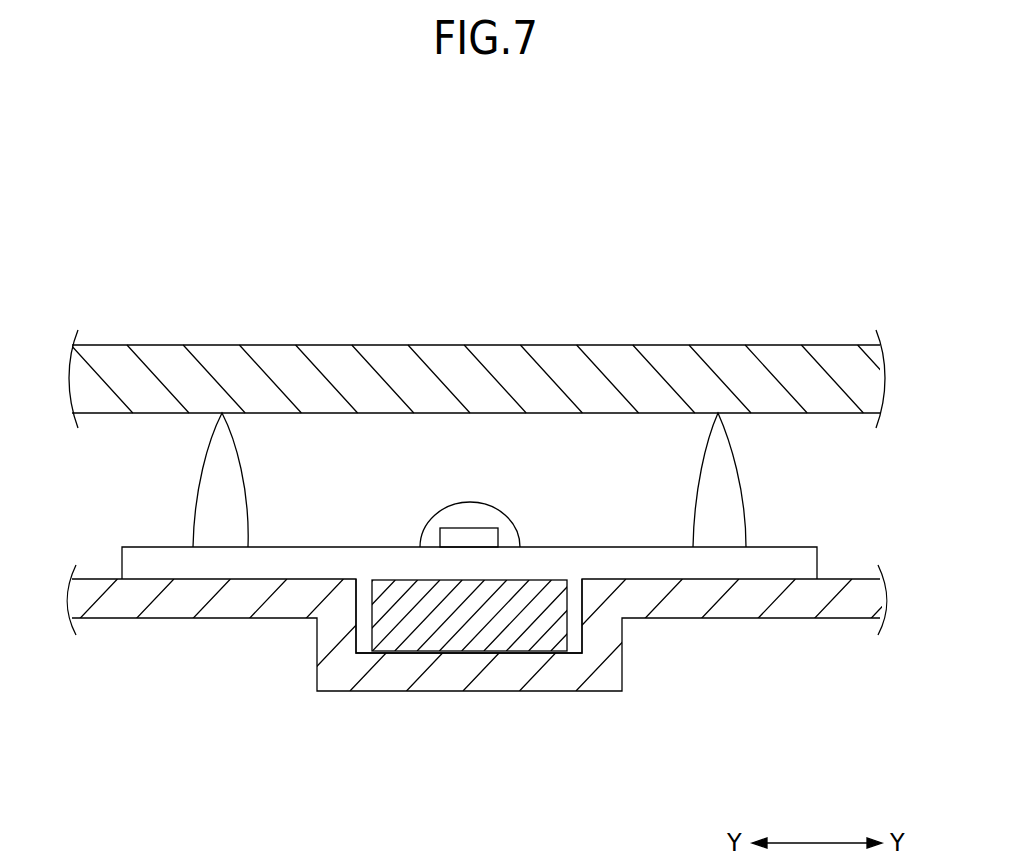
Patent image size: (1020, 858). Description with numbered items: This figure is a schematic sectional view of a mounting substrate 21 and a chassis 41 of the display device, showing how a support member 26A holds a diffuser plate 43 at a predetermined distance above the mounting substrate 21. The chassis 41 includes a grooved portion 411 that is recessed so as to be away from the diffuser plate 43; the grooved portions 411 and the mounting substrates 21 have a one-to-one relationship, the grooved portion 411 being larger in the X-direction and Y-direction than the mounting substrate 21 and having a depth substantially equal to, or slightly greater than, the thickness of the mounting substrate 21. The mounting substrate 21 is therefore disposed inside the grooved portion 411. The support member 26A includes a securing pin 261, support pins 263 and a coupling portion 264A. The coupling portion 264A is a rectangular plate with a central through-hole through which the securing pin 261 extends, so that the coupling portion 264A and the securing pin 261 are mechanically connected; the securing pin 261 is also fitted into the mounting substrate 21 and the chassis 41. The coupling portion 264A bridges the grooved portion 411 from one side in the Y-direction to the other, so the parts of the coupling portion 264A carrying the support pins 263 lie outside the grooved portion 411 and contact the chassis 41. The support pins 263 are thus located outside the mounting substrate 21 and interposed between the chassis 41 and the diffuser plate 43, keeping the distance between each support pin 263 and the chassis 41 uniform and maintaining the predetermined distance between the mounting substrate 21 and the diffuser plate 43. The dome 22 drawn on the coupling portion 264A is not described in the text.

The diffuser plate 43 is at (811, 358).
The support pins 263 is at (204, 496).
The sealing dome 22 is at (465, 514).
The securing pin 261 is at (480, 537).
The coupling portion 264A is at (328, 562).
The support member 26A is at (516, 536).
The chassis 41 is at (810, 601).
The grooved portions 411 is at (580, 622).
The mounting substrate 21 is at (472, 633).